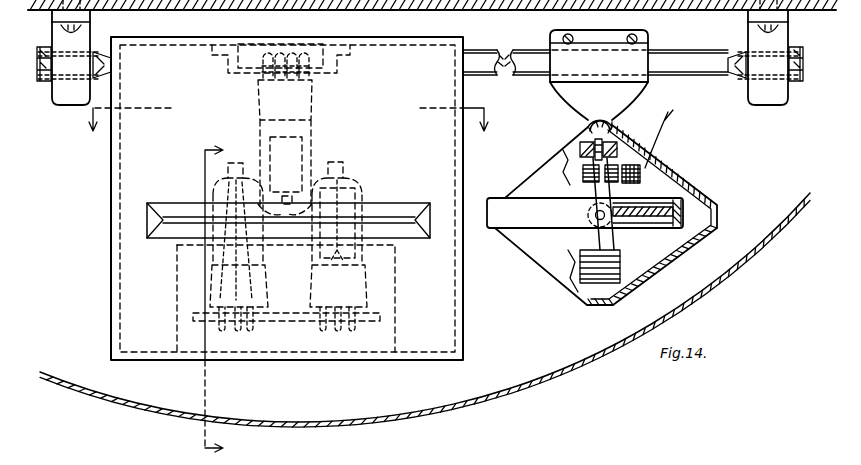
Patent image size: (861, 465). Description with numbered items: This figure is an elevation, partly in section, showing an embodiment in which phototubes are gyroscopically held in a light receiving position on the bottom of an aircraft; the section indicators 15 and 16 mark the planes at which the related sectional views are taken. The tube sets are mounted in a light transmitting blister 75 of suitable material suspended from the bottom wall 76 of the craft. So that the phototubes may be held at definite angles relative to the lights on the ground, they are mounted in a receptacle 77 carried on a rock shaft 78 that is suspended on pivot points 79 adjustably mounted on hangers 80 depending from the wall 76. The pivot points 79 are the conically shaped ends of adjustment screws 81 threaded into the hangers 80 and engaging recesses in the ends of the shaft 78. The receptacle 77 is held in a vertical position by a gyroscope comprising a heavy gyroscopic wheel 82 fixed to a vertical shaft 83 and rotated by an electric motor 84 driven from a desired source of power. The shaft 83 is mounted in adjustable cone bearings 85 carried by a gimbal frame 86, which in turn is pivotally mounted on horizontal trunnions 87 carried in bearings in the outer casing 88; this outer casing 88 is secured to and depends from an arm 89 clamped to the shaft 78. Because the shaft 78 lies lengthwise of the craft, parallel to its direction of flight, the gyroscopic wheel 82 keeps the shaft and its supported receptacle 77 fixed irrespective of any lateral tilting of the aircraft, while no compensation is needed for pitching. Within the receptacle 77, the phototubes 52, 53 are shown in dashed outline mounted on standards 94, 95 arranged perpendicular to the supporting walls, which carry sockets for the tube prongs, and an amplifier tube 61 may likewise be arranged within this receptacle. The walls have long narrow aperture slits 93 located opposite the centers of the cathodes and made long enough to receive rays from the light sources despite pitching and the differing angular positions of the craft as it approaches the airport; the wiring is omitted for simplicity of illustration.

The section line 15- 15 is at (288, 132).
The section line 16- 16 is at (227, 301).
The electron tube 52 is at (216, 181).
The electron tube 53 is at (361, 188).
The amplifier tube 61 is at (313, 151).
The light transmitting blister 75 is at (495, 396).
The bottom wall 76 is at (500, 11).
The receptacle 77 is at (451, 328).
The rock shaft 78 is at (520, 72).
The pivot points 79 is at (104, 52).
The hangers 80 is at (419, 52).
The adjustment screws 81 is at (42, 84).
The gyroscopic wheel 82 is at (652, 222).
The vertical shaft 83 is at (614, 172).
The electric motor 84 is at (641, 181).
The cone bearings 85 is at (610, 140).
The gimbal frame 86 is at (585, 143).
The horizontal trunnions 87 is at (596, 214).
The outer casing 88 is at (718, 178).
The arm 89 is at (599, 75).
The aperture slits 93 is at (406, 231).
The standard 94 is at (280, 322).
The standard 95 is at (178, 332).